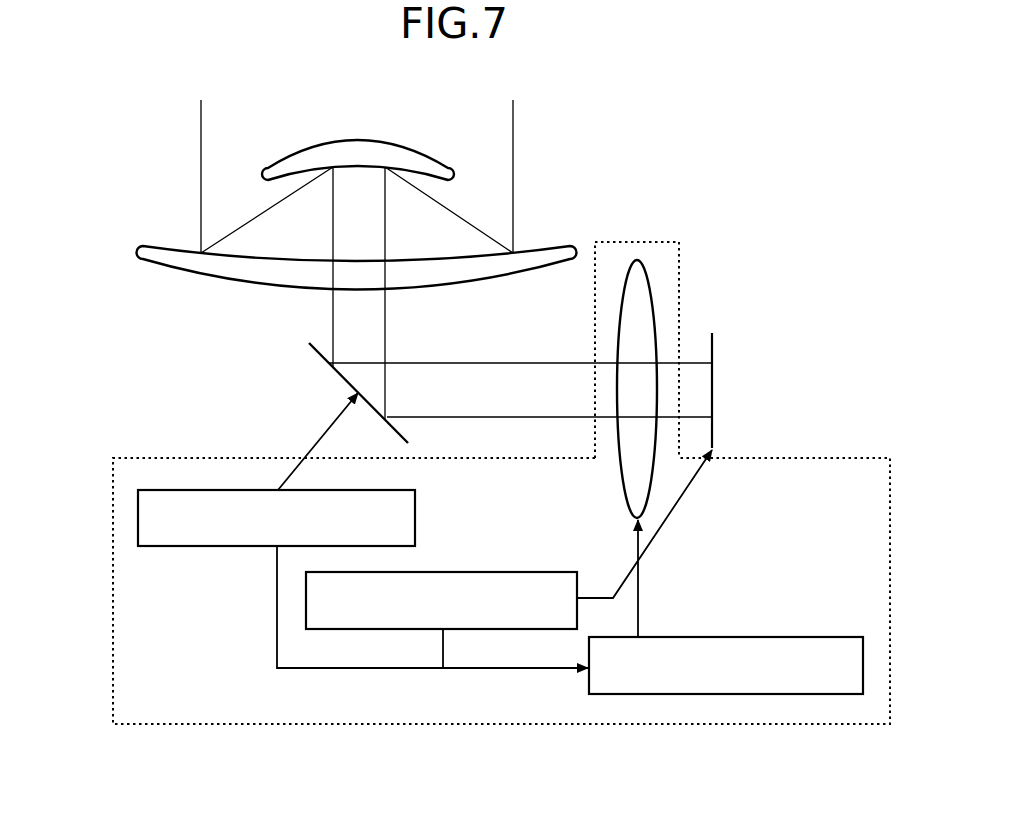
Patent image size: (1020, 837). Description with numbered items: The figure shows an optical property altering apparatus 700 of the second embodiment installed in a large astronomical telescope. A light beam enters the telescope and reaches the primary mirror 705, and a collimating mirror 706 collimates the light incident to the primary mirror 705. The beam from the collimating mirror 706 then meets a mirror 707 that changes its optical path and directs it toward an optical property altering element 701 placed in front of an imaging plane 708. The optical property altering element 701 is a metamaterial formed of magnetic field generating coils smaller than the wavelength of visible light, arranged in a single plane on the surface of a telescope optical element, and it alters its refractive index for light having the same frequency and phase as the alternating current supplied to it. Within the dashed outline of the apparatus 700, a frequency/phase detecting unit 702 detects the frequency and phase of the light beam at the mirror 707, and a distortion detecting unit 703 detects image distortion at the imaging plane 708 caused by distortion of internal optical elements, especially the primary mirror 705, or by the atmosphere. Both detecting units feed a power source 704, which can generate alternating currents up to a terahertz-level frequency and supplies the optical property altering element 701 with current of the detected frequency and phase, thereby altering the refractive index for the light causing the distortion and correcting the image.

The optical property altering apparatus 700 is at (112, 696).
The optical property altering element 701 is at (648, 278).
The frequency/phase detecting unit 702 is at (415, 512).
The distortion detecting unit 703 is at (500, 570).
The power source 704 is at (752, 635).
The primary mirror 705 is at (158, 270).
The collimating mirror 706 is at (358, 140).
The mirror 707 is at (318, 356).
The imaging plane 708 is at (710, 392).